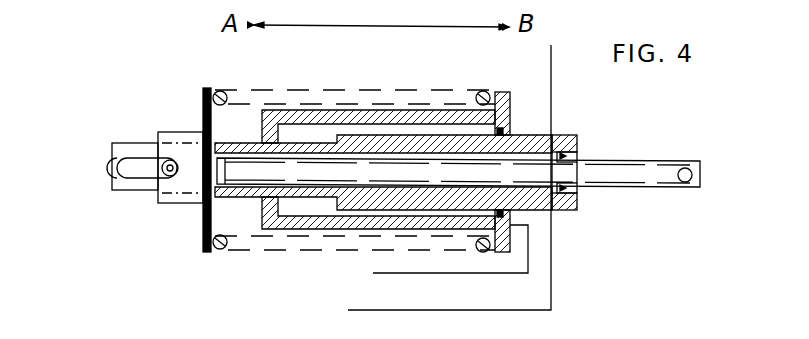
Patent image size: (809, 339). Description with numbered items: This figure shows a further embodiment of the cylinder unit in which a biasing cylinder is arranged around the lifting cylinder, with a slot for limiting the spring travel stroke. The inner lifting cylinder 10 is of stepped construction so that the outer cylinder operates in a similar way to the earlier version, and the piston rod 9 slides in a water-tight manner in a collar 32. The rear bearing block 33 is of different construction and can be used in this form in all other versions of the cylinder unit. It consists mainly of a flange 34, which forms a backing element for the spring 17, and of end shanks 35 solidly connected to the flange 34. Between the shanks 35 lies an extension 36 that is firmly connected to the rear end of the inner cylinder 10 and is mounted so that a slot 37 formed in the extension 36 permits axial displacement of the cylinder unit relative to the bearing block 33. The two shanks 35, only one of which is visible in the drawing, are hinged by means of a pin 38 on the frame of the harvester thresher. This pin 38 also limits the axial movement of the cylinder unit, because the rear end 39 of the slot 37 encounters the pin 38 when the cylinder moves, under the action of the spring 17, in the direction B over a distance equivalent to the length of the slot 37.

The piston rod 9 is at (625, 170).
The inner lifting cylinder 10 is at (531, 135).
The spring 17 is at (478, 96).
The collar 32 is at (578, 153).
The rear bearing block 33 is at (179, 126).
The flange 34 is at (205, 86).
The end shanks 35 is at (189, 200).
The extension 36 is at (122, 150).
The slot 37 is at (143, 162).
The pin 38 is at (168, 178).
The rear end of the slot 39 is at (117, 170).